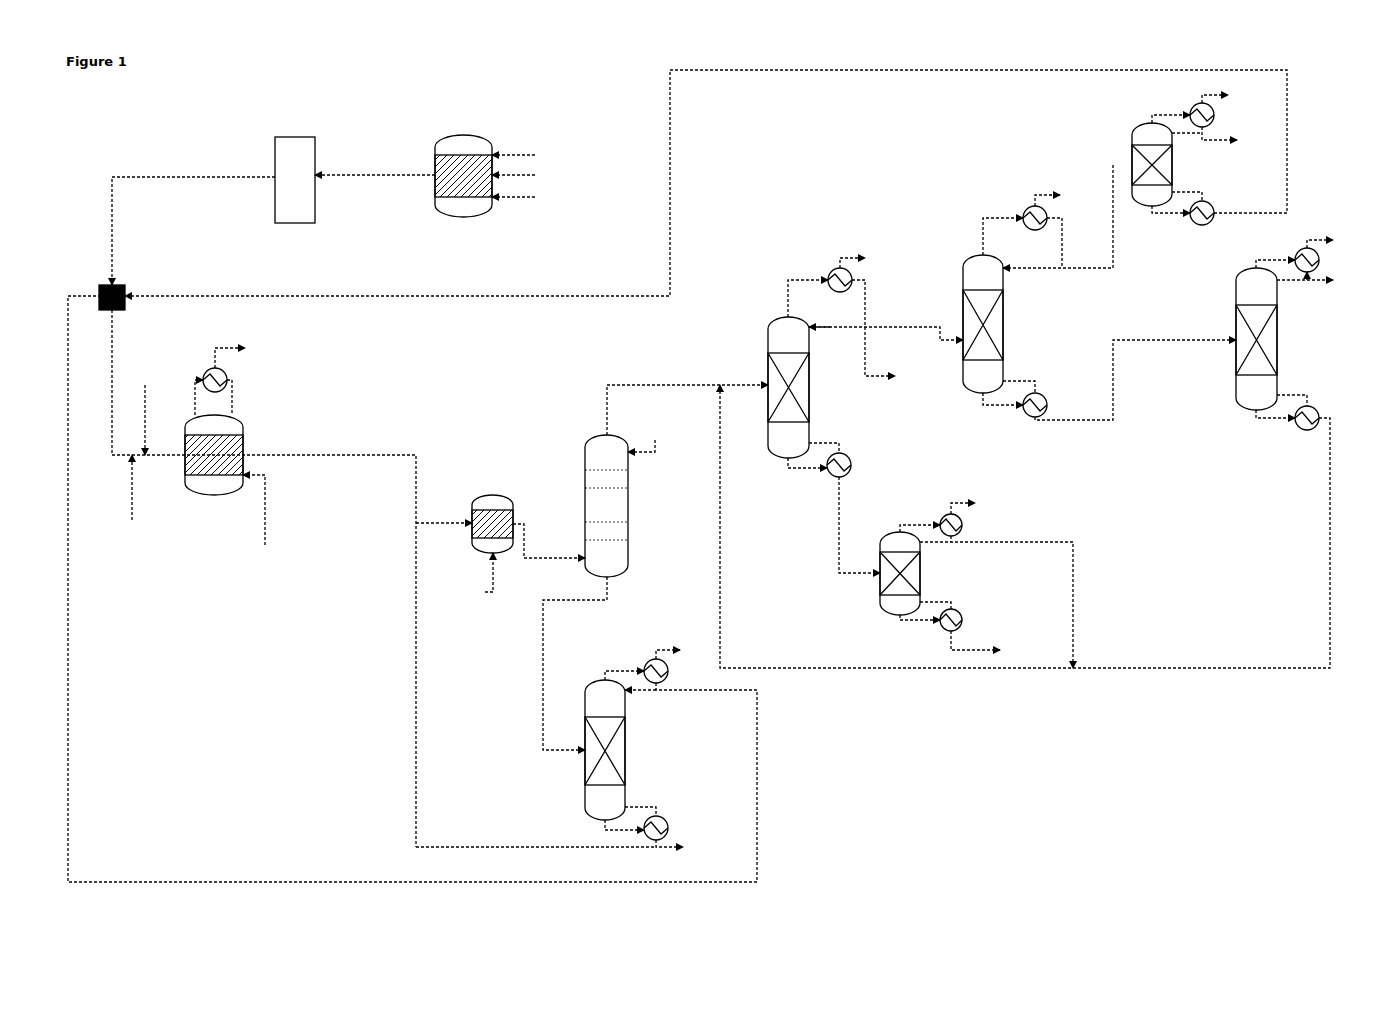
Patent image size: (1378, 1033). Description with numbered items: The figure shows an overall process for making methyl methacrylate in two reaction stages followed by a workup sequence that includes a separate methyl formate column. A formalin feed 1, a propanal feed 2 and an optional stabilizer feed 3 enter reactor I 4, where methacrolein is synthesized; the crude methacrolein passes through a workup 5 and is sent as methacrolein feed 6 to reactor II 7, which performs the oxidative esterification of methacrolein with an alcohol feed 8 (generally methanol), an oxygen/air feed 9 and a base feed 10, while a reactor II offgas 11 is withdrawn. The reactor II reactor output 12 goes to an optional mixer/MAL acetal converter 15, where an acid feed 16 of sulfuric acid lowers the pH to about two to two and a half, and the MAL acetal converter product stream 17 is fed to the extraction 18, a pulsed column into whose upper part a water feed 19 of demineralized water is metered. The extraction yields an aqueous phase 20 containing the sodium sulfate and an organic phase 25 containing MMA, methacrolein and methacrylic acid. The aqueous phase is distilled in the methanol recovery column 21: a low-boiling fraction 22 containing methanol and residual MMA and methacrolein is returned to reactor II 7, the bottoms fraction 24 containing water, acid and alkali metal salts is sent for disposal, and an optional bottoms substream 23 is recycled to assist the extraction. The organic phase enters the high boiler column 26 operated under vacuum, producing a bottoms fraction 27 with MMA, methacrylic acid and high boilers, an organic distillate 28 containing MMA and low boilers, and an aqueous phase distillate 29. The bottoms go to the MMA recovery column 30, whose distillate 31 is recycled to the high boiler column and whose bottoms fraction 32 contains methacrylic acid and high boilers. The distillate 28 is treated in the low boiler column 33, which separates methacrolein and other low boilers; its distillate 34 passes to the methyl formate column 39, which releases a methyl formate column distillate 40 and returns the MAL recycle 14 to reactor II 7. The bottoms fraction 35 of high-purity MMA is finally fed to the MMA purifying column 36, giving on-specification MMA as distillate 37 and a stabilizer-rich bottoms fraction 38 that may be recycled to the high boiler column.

The formalin feed 1 is at (527, 155).
The propanal feed 2 is at (527, 175).
The optional stabilizer feed 3 is at (527, 196).
The reactor I 4 is at (463, 176).
The workup of the crude methacrolein 5 is at (355, 180).
The methacrolein feed 6 is at (193, 231).
The reactor II 7 is at (214, 431).
The alcohol feed 8 is at (144, 411).
The oxygen/air feed 9 is at (258, 520).
The base feed 10 is at (126, 487).
The reactor II offgas 11 is at (235, 347).
The reactor II reactor output 12 is at (264, 639).
The MAL recycle 14 is at (706, 183).
The optional mixer/MAL acetal converter 15 is at (464, 516).
The acid feed 16 is at (474, 572).
The MAL acetal converter product stream 17 is at (549, 541).
The extraction 18 is at (606, 506).
The water feed for extraction 19 is at (647, 438).
The aqueous phase extraction 20 is at (556, 663).
The methanol recovery column 21 is at (634, 734).
The low-boiling fraction containing alcohol 22 is at (412, 589).
The optional bottoms fraction recycle 23 is at (536, 856).
The bottoms fraction for disposal 24 is at (689, 847).
The organic phase from the extraction 25 is at (687, 402).
The high boiler column 26 is at (832, 358).
The bottoms fraction (third phase) 27 is at (844, 525).
The distillate (fourth phase) 28 is at (886, 324).
The aqueous phase distillate 29 is at (874, 328).
The MMA recovery column 30 is at (942, 563).
The distillate from the MMA recovery column 31 is at (996, 602).
The bottoms fraction from the MMA recovery column 32 is at (994, 644).
The low boiler column 33 is at (1026, 299).
The distillate from the low boiler column 34 is at (1075, 216).
The bottoms fraction from the low boiler column 35 is at (1135, 392).
The MMA purifying column 36 is at (1298, 327).
The on-specification MMA distillate 37 is at (1323, 280).
The bottoms fraction from the MMA purifying column 38 is at (1025, 526).
The methyl formate column 39 is at (1193, 155).
The methyl formate column distillate 40 is at (1212, 144).